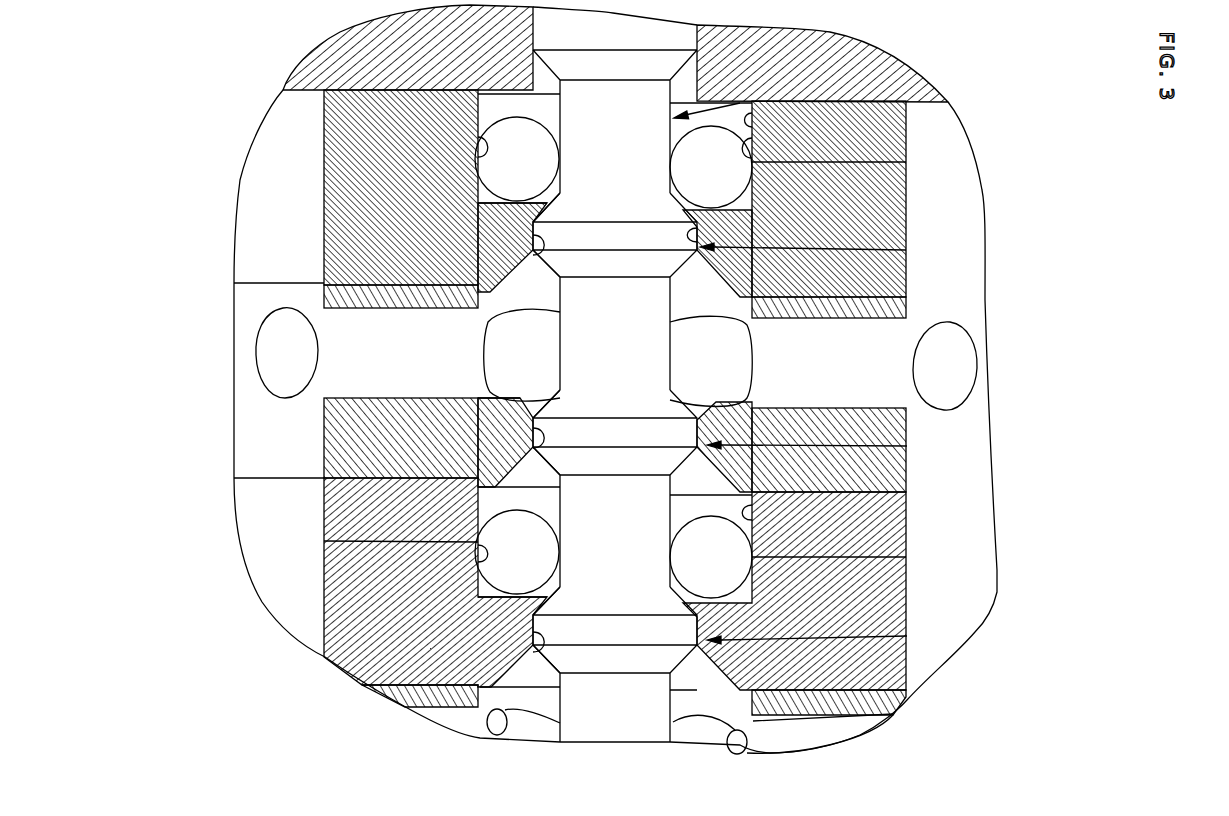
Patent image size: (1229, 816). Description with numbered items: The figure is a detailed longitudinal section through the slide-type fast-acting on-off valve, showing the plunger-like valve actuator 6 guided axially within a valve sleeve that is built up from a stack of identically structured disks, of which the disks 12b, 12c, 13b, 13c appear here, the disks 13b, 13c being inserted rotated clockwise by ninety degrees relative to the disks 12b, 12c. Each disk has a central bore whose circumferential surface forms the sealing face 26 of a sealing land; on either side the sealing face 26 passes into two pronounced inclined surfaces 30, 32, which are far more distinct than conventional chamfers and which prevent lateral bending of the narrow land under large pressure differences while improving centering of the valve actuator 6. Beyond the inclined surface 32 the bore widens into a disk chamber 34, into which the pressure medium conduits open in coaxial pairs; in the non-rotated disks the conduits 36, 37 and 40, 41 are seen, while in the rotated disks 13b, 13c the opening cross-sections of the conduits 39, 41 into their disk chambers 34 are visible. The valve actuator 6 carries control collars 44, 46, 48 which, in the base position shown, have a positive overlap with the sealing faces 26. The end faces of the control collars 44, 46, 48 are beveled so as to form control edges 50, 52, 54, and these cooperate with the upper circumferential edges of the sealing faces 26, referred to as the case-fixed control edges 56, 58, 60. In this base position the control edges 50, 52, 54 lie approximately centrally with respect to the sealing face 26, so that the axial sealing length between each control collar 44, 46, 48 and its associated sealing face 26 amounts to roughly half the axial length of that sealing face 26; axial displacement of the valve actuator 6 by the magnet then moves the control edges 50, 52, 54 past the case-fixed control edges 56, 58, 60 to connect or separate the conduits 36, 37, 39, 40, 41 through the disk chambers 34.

The valve actuator 6 is at (867, 62).
The disk 12b is at (907, 707).
The disk 12c is at (907, 320).
The disk 13b is at (907, 530).
The disk 13c is at (850, 150).
The sealing face 26 is at (533, 227).
The inclined surface 30 is at (533, 250).
The inclined surface 32 is at (522, 420).
The disk chamber 34 is at (760, 135).
The pressure medium conduit 36 is at (880, 395).
The pressure medium conduit 37 is at (365, 368).
The pressure medium conduit 39 is at (906, 163).
The pressure medium conduit 40 is at (953, 370).
The pressure medium conduit 41 is at (478, 152).
The control collar 44 is at (907, 636).
The control collar 46 is at (907, 446).
The control collar 48 is at (906, 250).
The control edge 50 is at (603, 645).
The control edge 52 is at (625, 450).
The control edge 54 is at (648, 250).
The case-fixed control edge 56 is at (537, 623).
The case-fixed control edge 58 is at (567, 418).
The case-fixed control edge 60 is at (550, 224).